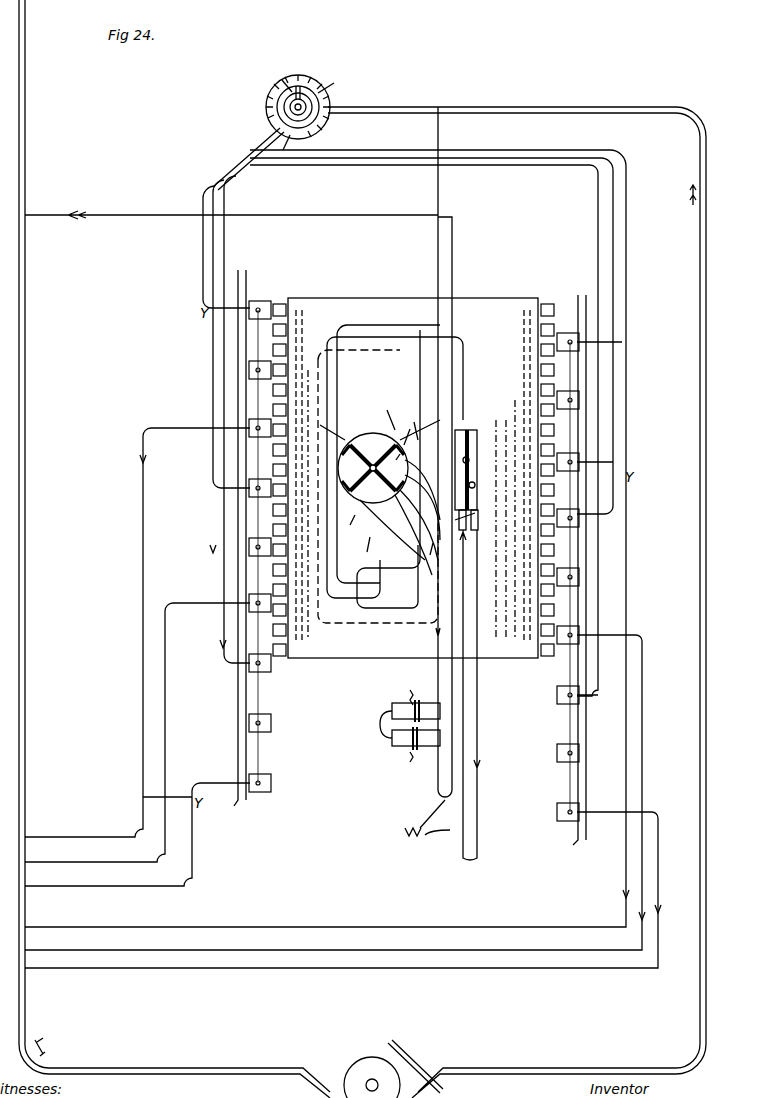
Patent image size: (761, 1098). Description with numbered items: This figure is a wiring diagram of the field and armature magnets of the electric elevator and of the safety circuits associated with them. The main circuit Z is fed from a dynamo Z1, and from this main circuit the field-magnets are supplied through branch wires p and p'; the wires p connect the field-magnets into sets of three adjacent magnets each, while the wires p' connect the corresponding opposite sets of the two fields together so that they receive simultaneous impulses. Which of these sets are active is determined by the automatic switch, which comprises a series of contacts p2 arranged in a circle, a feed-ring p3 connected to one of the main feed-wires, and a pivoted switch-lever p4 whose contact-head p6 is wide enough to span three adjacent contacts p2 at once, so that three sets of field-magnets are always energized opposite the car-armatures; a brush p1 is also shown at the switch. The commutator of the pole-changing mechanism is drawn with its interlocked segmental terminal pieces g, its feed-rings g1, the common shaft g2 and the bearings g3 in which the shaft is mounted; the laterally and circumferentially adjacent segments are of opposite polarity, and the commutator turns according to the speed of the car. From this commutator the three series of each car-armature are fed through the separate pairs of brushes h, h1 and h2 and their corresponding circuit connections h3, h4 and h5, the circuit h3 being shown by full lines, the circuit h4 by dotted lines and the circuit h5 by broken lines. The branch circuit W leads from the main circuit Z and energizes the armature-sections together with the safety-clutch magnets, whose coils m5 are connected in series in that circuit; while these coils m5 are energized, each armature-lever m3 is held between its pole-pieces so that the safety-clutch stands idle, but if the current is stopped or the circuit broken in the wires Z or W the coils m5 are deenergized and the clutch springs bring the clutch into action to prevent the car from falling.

The wires p is at (231, 531).
The wires p' is at (343, 559).
The brush p1 is at (262, 116).
The contacts p2 is at (352, 107).
The feed-ring p3 is at (280, 158).
The pivoted switch-lever p4 is at (282, 80).
The contact-head p6 is at (298, 76).
The brushes h is at (353, 420).
The brushes h1 is at (404, 482).
The brushes h2 is at (381, 466).
The circuit connection h3 is at (376, 318).
The circuit connection h4 is at (414, 336).
The circuit connection h5 is at (328, 350).
The segmental terminal pieces g is at (380, 497).
The feed-rings g1 is at (486, 415).
The shaft g2 is at (397, 463).
The bearings g3 is at (455, 520).
The armature-lever m3 is at (420, 700).
The coils m5 is at (400, 700).
The circuit W is at (440, 262).
The main circuit Z is at (706, 325).
The dynamo Z1 is at (400, 1060).